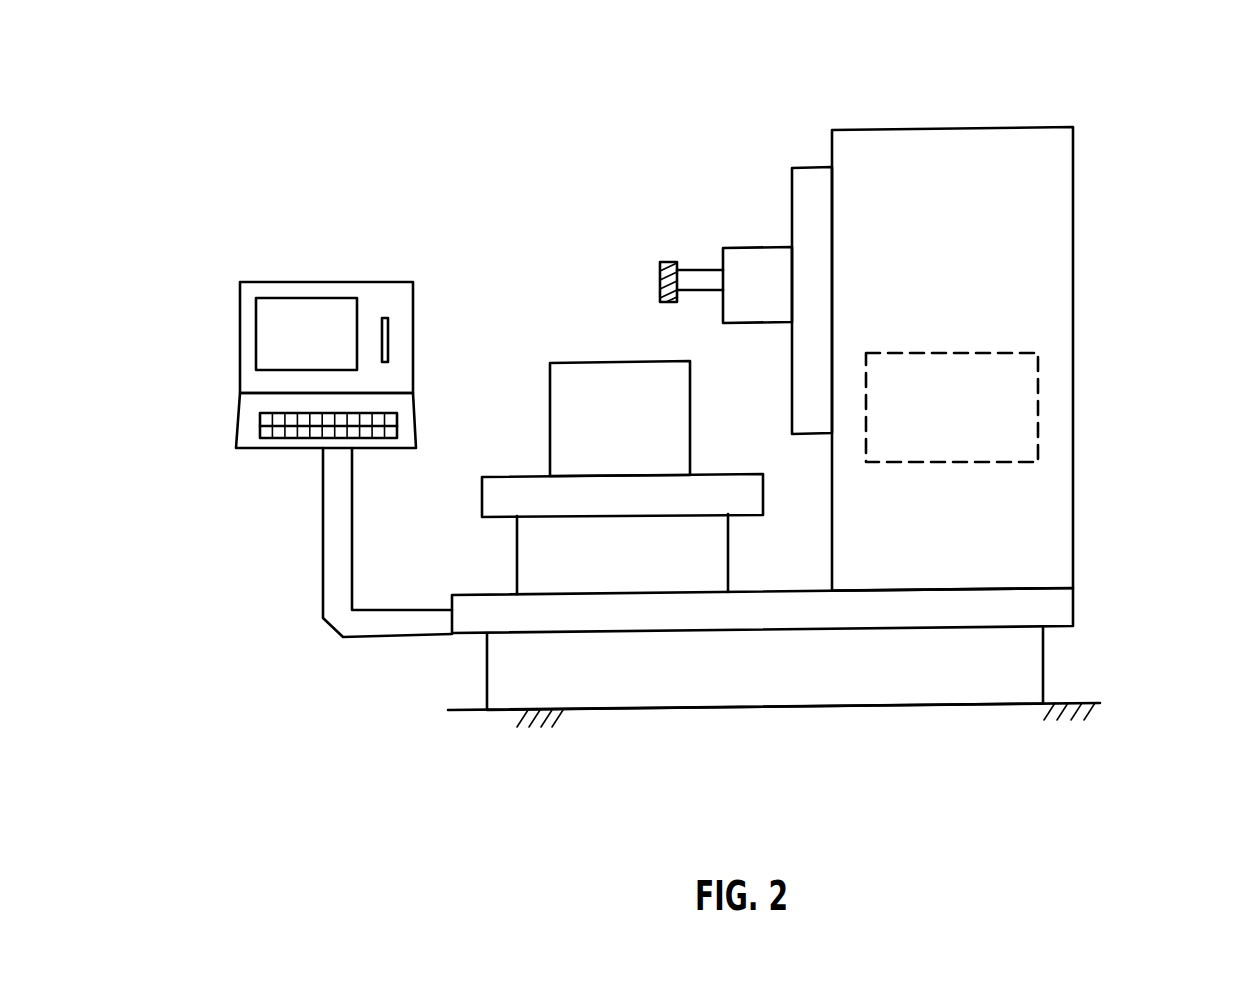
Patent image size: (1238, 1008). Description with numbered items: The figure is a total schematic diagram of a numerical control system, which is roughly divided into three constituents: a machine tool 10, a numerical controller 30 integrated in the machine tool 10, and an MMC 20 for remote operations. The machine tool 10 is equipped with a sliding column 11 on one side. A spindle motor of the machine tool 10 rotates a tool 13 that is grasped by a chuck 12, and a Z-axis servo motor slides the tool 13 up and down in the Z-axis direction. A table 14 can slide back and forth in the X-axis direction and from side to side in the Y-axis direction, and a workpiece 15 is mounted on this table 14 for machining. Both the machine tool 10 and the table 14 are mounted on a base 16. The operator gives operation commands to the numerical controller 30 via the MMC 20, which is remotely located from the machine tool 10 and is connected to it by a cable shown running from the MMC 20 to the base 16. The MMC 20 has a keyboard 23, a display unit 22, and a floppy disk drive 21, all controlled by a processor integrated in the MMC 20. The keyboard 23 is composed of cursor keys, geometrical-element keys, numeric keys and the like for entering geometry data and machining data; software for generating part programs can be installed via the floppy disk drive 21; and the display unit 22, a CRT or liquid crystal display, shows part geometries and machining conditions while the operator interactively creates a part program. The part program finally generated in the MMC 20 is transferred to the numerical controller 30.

The machine tool 10 is at (855, 130).
The sliding column 11 is at (807, 167).
The chuck 12 is at (745, 247).
The tool 13 is at (660, 268).
The table 14 is at (722, 474).
The workpiece 15 is at (565, 362).
The base 16 is at (737, 690).
The MMC 20 is at (296, 428).
The floppy disk drive 21 is at (382, 318).
The display unit 22 is at (270, 298).
The keyboard 23 is at (388, 438).
The numerical controller 30 is at (1045, 405).